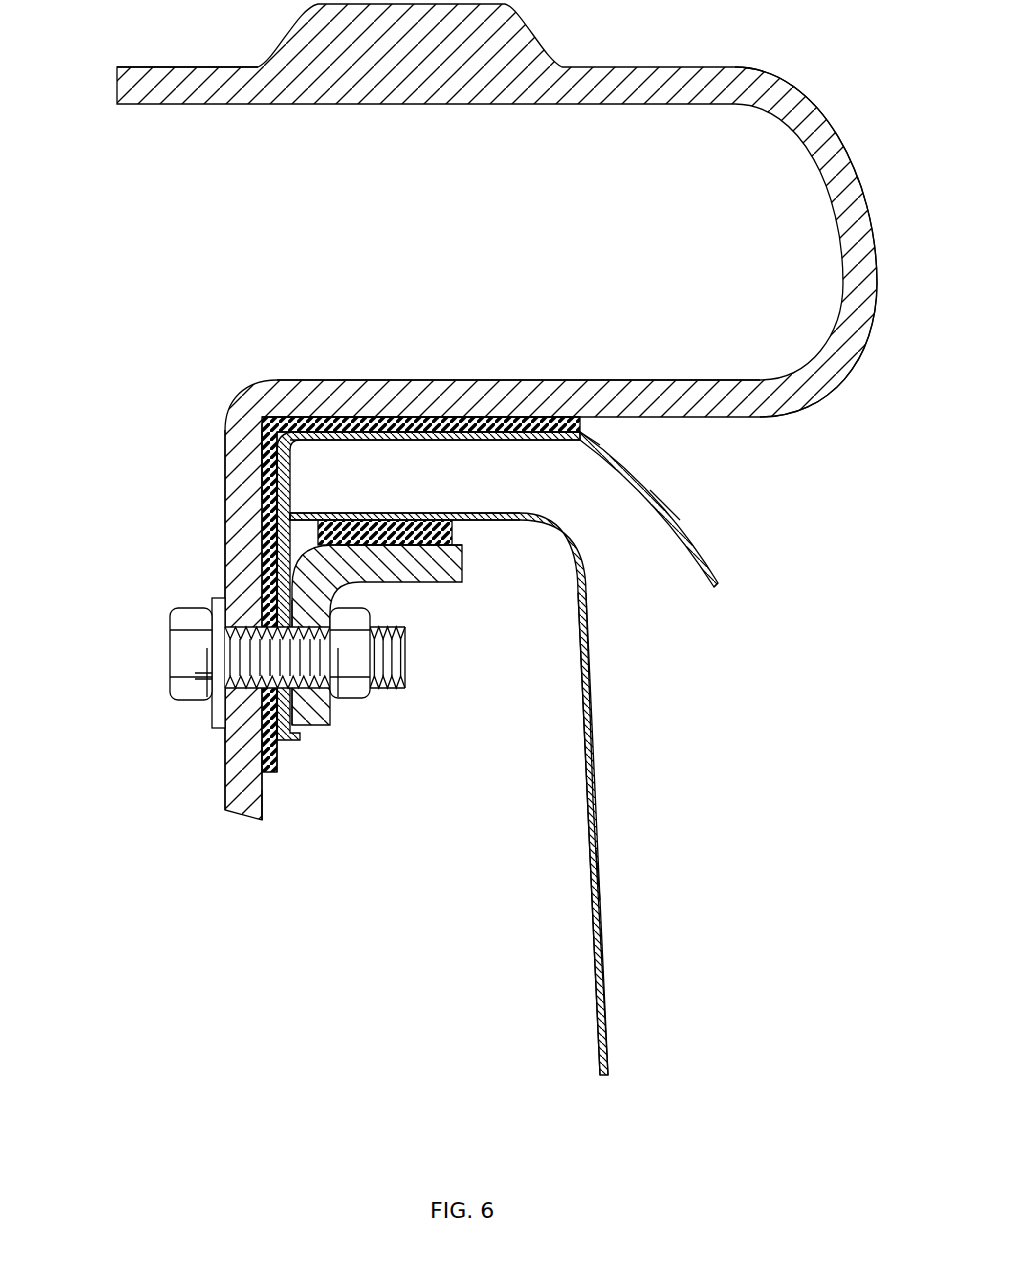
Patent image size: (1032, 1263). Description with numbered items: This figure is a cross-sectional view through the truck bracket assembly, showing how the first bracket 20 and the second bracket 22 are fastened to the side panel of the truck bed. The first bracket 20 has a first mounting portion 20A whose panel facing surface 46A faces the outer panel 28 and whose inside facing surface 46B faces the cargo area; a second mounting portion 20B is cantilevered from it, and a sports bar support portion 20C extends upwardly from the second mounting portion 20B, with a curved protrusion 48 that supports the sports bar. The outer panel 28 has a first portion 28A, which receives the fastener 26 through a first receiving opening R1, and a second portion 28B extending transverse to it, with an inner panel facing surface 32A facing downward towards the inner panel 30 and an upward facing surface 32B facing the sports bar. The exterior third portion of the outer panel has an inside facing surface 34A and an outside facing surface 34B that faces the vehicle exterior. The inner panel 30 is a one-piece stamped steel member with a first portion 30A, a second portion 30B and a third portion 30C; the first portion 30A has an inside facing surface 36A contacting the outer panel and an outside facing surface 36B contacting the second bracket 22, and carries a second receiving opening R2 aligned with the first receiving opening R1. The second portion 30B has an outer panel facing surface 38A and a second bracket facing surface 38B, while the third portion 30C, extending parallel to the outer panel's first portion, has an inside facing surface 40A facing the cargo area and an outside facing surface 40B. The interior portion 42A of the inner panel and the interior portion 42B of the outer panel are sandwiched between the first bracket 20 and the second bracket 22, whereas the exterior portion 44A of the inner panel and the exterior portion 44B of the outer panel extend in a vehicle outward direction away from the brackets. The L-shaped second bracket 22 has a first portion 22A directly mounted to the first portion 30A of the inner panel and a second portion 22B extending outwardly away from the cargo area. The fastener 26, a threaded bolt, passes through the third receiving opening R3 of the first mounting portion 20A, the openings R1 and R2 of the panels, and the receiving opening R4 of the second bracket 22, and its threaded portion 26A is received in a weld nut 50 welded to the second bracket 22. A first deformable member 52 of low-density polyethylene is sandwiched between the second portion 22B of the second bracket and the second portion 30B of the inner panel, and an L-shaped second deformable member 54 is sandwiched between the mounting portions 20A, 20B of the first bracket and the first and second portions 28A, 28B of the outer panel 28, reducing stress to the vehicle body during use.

The first bracket 20 is at (158, 405).
The first mounting portion 20A is at (227, 783).
The second mounting portion 20B is at (601, 378).
The sports bar support portion 20C is at (622, 64).
The second bracket 22 is at (343, 738).
The first portion of the second bracket 22A is at (314, 705).
The second portion of the second bracket 22B is at (448, 563).
The fastener 26 is at (157, 622).
The threaded portion 26A is at (372, 690).
The outer panel 28 is at (683, 488).
The first portion of the outer panel 28A is at (263, 525).
The second portion of the outer panel 28B is at (492, 416).
The inner panel 30 is at (580, 545).
The first portion of the inner panel 30A is at (290, 735).
The second portion of the inner panel 30B is at (288, 474).
The third portion of the inner panel 30C is at (602, 794).
The inner panel facing surface 32A is at (458, 441).
The upward facing surface 32B is at (356, 416).
The inside facing surface 34A is at (706, 566).
The outside facing surface 34B is at (700, 546).
The inside facing surface 36A is at (262, 563).
The outside facing surface 36B is at (295, 518).
The outer panel facing surface 38A is at (512, 513).
The second bracket facing surface 38B is at (476, 521).
The inside facing surface 40A is at (596, 917).
The outside facing surface 40B is at (597, 702).
The interior portion of the inner panel 42A is at (320, 817).
The interior portion of the outer panel 42B is at (636, 450).
The exterior portion of the inner panel 44A is at (645, 877).
The exterior portion of the outer panel 44B is at (700, 514).
The panel facing surface 46A is at (262, 790).
The inside facing surface 46B is at (225, 768).
The curved protrusion 48 is at (846, 160).
The weld nut 50 is at (345, 615).
The first deformable member 52 is at (427, 521).
The second deformable member 54 is at (262, 460).
The first receiving opening R1 is at (312, 690).
The second receiving opening R2 is at (292, 692).
The third receiving opening R3 is at (262, 638).
The receiving opening R4 is at (506, 683).